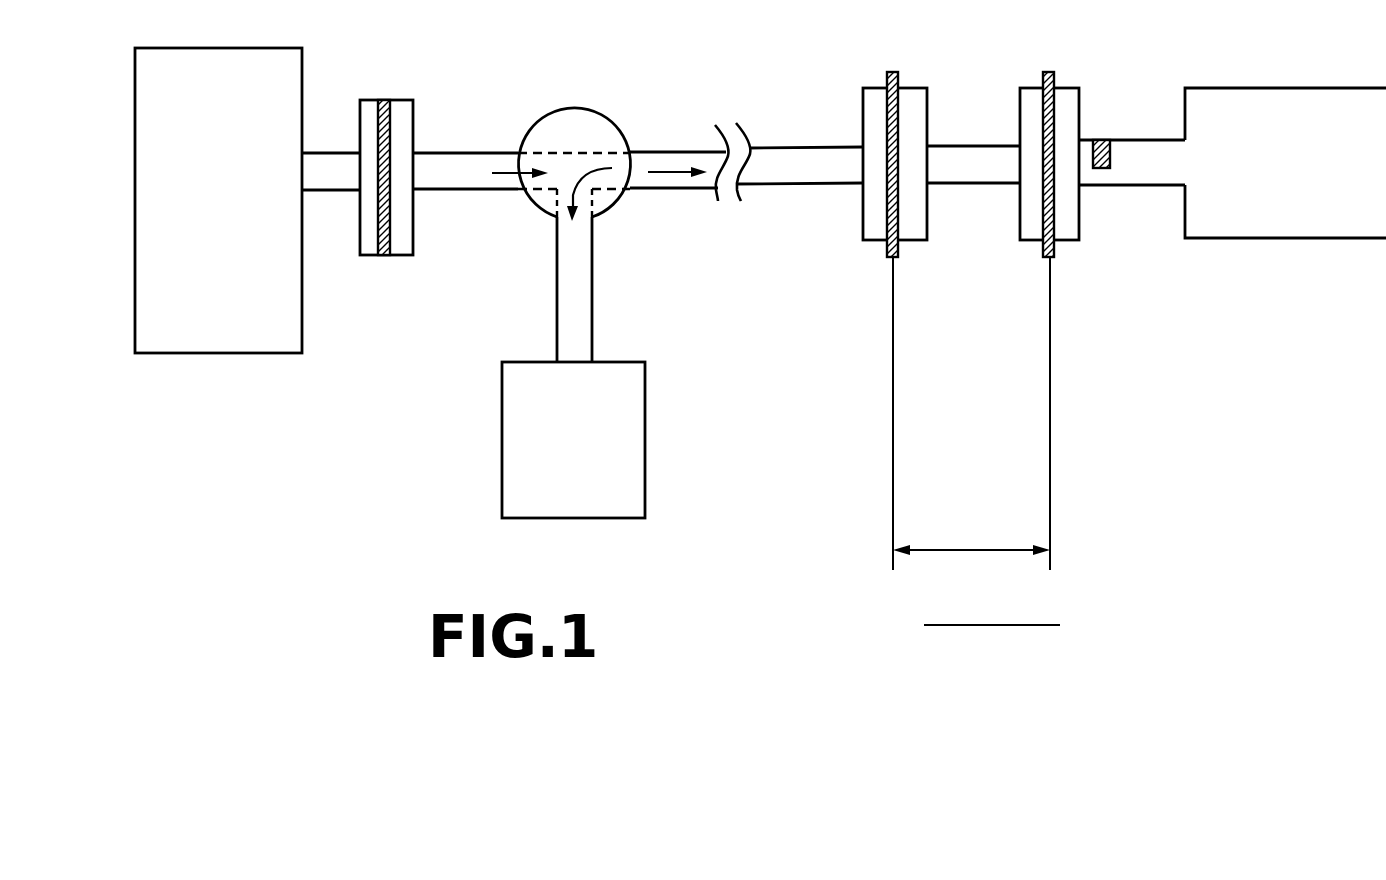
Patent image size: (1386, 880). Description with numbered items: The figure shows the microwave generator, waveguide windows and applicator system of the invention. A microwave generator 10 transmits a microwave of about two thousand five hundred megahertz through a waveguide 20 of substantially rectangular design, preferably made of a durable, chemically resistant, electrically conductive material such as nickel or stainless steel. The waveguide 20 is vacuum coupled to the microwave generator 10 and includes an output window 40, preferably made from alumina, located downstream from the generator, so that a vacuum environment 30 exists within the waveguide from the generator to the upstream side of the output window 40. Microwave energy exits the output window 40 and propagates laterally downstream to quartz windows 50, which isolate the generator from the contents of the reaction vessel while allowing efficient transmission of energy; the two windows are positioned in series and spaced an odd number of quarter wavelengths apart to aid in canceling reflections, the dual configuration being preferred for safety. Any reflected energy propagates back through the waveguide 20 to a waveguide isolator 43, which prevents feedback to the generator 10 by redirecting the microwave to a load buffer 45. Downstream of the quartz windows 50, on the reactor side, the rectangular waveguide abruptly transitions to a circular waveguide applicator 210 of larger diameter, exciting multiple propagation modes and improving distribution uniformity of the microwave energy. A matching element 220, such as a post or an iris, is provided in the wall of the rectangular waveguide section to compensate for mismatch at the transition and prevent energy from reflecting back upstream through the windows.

The microwave generator 10 is at (236, 215).
The waveguide 20 is at (652, 193).
The vacuum environment 30 is at (320, 167).
The output window 40 is at (383, 86).
The waveguide isolator 43 is at (585, 106).
The load buffer 45 is at (590, 456).
The quartz windows 50 is at (1035, 65).
The circular waveguide applicator 210 is at (1187, 243).
The matching element 220 is at (1102, 138).